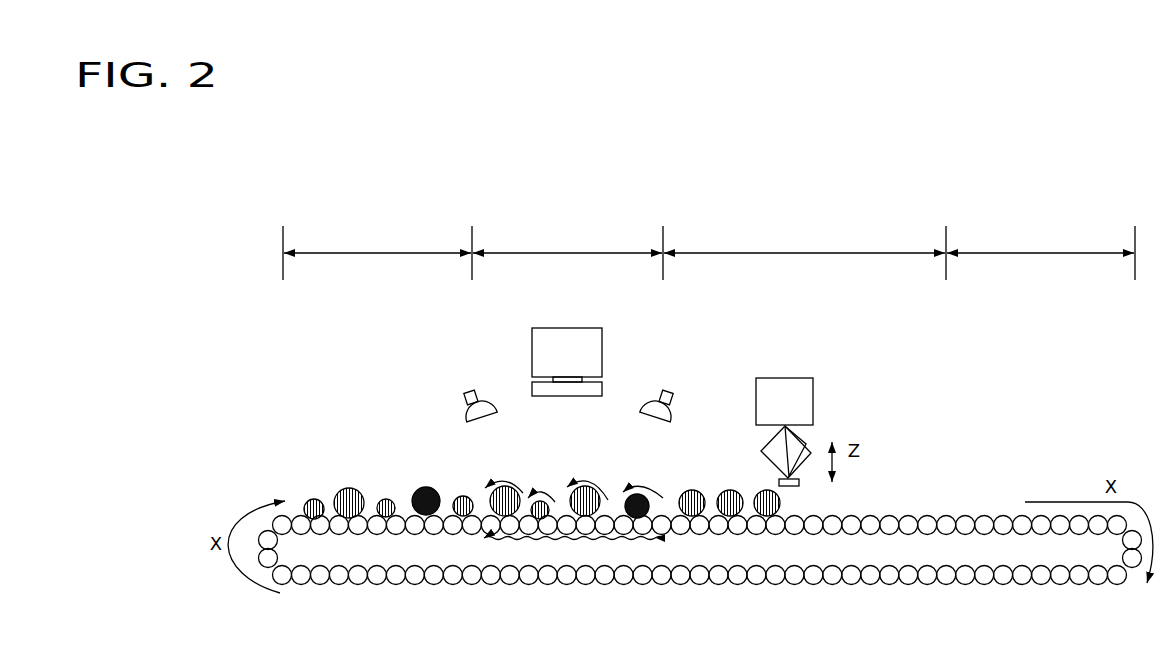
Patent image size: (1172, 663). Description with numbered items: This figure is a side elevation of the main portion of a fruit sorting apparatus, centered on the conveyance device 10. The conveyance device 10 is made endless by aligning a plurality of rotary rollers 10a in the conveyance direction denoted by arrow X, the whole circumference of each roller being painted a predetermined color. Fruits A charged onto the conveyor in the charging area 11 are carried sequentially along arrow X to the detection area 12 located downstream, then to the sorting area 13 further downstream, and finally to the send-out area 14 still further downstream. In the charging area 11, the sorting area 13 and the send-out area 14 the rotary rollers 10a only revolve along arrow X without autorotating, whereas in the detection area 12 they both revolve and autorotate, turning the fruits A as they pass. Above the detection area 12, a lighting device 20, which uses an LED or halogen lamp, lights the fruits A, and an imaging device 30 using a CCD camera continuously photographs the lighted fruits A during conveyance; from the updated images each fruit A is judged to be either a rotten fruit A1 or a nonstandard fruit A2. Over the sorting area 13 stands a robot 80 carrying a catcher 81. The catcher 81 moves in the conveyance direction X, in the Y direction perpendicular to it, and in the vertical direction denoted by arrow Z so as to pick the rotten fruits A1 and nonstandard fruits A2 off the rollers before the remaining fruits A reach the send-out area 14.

The conveyance device 10 is at (793, 588).
The rotary roller 10a is at (565, 517).
The charging area 11 is at (377, 258).
The detection area 12 is at (567, 258).
The sorting area 13 is at (804, 258).
The send-out area 14 is at (1040, 258).
The lighting device 20 is at (469, 413).
The imaging device 30 is at (602, 360).
The robot 80 is at (813, 392).
The catcher 81 is at (762, 445).
The fruit A is at (344, 491).
The rotten fruit A1 is at (428, 487).
The nonstandard fruit A2 is at (388, 498).